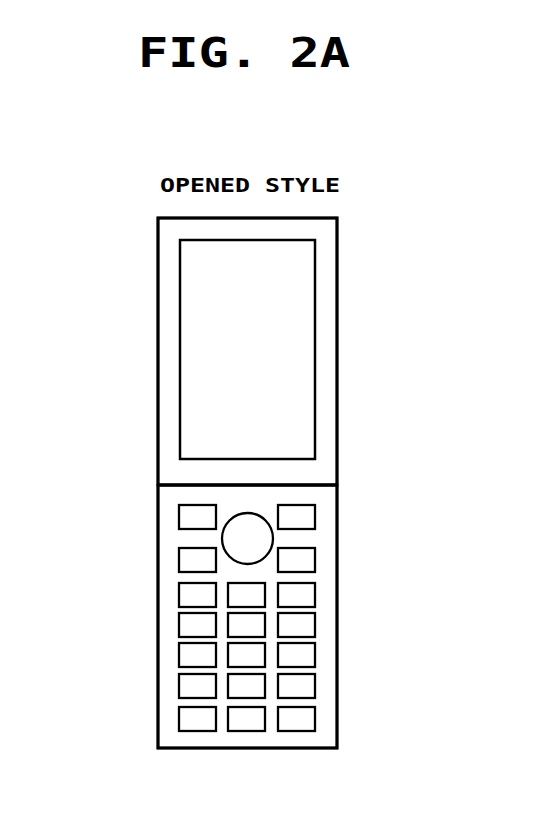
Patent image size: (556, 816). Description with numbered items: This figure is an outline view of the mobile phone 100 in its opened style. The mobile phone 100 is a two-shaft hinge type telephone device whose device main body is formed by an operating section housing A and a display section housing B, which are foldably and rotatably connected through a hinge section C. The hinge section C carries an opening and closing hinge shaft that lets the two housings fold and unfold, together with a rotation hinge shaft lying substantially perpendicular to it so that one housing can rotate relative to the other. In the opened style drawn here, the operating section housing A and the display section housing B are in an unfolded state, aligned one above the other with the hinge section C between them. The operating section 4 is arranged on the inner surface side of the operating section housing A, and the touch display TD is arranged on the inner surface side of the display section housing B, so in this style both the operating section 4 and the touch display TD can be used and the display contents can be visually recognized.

The mobile phone 100 is at (452, 205).
The display section housing B is at (338, 413).
The hinge section C is at (338, 485).
The operating section housing A is at (322, 669).
The touch display TD is at (200, 423).
The operating section 4 is at (322, 623).